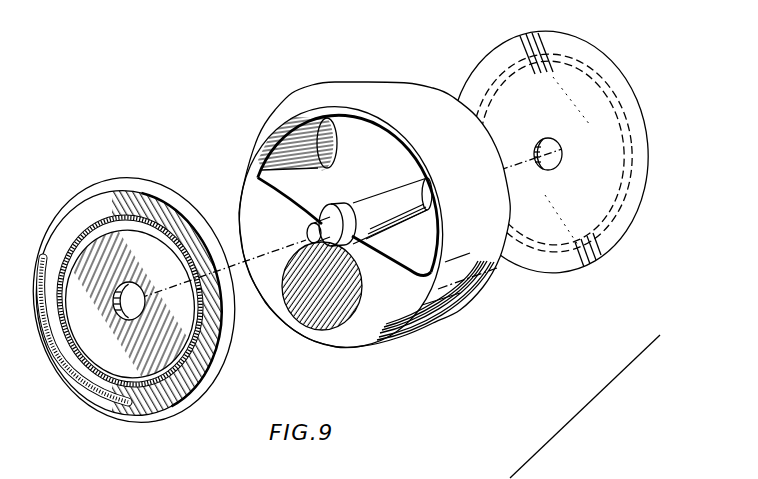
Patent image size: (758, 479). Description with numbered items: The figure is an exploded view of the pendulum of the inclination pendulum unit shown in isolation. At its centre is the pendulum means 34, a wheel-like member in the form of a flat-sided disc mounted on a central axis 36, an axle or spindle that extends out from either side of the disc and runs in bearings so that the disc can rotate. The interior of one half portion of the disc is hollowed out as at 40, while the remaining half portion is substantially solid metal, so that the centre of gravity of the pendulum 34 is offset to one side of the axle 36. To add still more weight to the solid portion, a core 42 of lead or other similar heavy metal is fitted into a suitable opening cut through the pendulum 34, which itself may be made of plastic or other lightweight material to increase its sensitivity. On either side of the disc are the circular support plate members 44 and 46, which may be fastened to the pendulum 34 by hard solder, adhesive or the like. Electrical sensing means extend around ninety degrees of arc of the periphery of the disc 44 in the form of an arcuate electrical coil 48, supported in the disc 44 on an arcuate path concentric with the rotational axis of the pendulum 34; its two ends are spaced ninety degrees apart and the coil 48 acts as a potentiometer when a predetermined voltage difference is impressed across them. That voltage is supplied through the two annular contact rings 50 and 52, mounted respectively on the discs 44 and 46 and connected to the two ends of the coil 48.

The pendulum means 34 is at (348, 100).
The central axis 36 is at (312, 230).
The hollowed out portion 40 is at (335, 153).
The core 42 is at (325, 302).
The circular support plate member 44 is at (150, 293).
The circular support plate member 46 is at (490, 60).
The arcuate electrical coil 48 is at (72, 375).
The annular contact ring 50 is at (197, 326).
The annular contact ring 52 is at (533, 248).